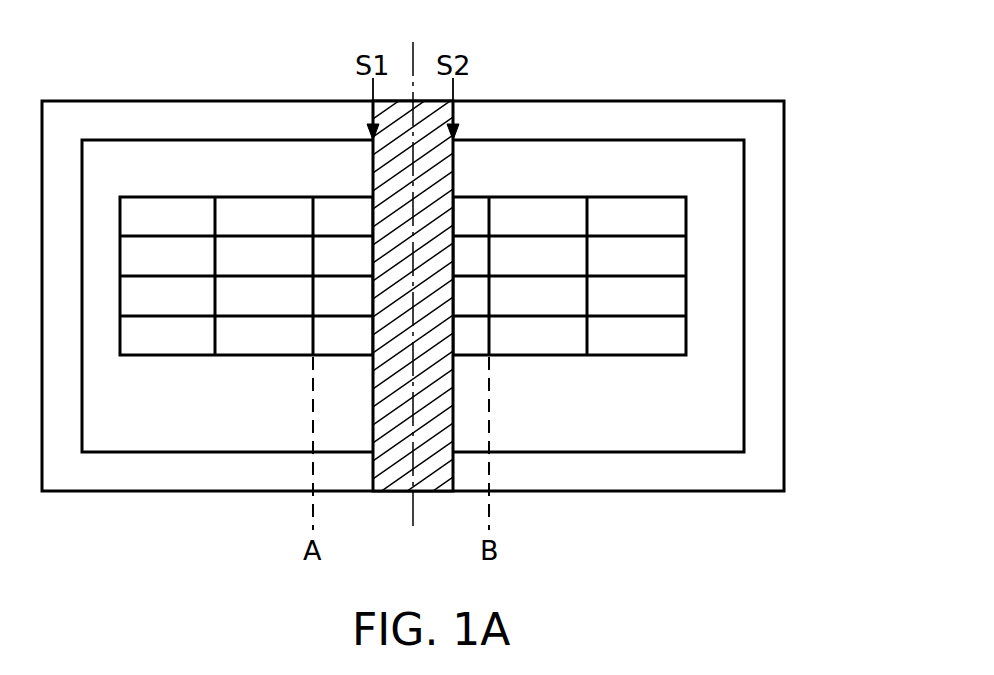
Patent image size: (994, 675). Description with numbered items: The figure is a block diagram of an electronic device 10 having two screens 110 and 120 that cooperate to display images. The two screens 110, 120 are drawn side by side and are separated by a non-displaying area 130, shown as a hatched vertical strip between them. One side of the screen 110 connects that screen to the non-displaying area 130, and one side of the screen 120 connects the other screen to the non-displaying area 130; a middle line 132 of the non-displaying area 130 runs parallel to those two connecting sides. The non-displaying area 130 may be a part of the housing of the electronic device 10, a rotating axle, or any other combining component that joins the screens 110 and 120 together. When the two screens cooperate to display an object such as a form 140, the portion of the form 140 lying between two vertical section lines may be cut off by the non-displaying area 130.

The electronic device 10 is at (784, 122).
The screen 110 is at (226, 140).
The screen 120 is at (596, 140).
The non-displaying area 130 is at (387, 483).
The middle line 132 is at (419, 269).
The form 140 is at (686, 296).